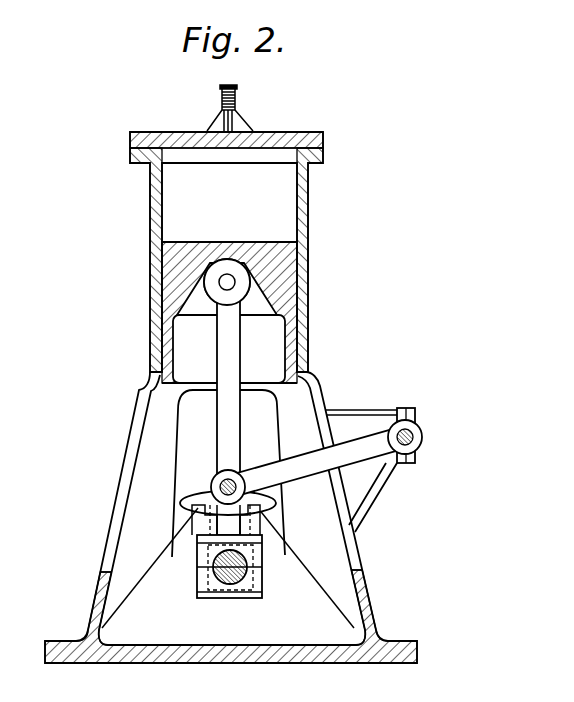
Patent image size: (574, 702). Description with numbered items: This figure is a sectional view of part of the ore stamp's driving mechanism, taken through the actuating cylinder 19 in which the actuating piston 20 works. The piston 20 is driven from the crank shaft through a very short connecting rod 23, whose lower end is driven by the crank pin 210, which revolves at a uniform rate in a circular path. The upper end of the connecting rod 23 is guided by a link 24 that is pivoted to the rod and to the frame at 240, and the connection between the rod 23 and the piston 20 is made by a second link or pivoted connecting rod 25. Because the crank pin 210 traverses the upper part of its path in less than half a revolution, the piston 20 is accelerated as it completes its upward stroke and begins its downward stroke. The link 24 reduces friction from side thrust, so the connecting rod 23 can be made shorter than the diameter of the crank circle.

The actuating cylinder 19 is at (162, 203).
The actuating piston 20 is at (256, 242).
The second link or pivoted connecting rod 25 is at (231, 362).
The connecting rod 23 is at (235, 518).
The link 24 is at (300, 462).
The pivot on the frame 240 is at (418, 433).
The crank pin 210 is at (216, 571).